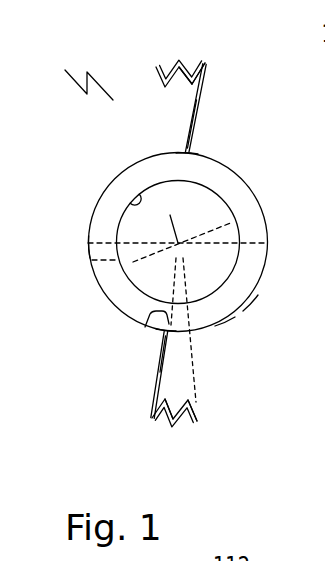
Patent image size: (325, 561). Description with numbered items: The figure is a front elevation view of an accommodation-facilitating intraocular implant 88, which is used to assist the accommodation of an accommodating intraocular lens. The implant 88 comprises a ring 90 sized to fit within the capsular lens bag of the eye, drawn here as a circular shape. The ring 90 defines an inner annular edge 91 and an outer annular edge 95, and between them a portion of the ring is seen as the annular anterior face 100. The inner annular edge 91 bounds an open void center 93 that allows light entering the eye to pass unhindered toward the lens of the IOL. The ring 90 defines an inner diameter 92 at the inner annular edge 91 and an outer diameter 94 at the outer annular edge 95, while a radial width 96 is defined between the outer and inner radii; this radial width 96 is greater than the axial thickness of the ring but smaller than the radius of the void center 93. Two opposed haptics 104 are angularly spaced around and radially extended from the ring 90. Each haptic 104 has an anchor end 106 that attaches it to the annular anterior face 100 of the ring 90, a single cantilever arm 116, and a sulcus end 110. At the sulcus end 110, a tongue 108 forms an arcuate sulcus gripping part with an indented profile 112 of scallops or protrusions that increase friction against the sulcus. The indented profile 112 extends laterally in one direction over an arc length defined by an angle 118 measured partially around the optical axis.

The accommodation-facilitating intraocular implant 88 is at (76, 71).
The ring 90 is at (253, 213).
The inner annular edge 91 is at (125, 212).
The inner diameter 92 is at (203, 228).
The open void center 93 is at (213, 262).
The outer diameter 94 is at (107, 241).
The outer annular edge 95 is at (225, 322).
The radial width 96 is at (93, 253).
The annular anterior face 100 is at (243, 290).
The haptics 104 is at (200, 107).
The anchor end 106 is at (187, 149).
The tongue 108 is at (206, 66).
The sulcus end 110 is at (160, 68).
The indented profile 112 is at (181, 66).
The arm 116 is at (197, 122).
The angle 118 is at (142, 323).